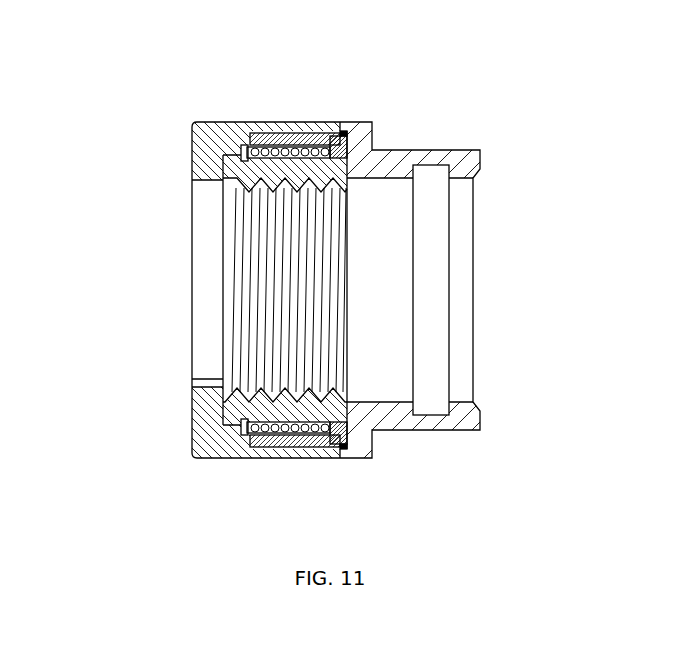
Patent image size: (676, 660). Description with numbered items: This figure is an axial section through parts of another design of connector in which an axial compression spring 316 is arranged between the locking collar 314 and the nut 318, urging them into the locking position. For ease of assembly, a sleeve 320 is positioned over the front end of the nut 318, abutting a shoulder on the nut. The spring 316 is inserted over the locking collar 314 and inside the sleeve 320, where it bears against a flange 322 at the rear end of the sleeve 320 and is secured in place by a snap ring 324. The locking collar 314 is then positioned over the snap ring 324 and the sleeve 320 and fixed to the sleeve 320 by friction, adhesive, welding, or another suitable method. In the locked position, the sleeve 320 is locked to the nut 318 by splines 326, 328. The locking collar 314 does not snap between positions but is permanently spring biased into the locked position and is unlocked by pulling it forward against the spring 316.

The locking collar 314 is at (192, 123).
The axial compression spring 316 is at (305, 133).
The nut 318 is at (453, 164).
The sleeve 320 is at (270, 133).
The flange 322 is at (347, 444).
The snap ring 324 is at (243, 424).
The spline 326 is at (337, 440).
The spline 328 is at (349, 131).